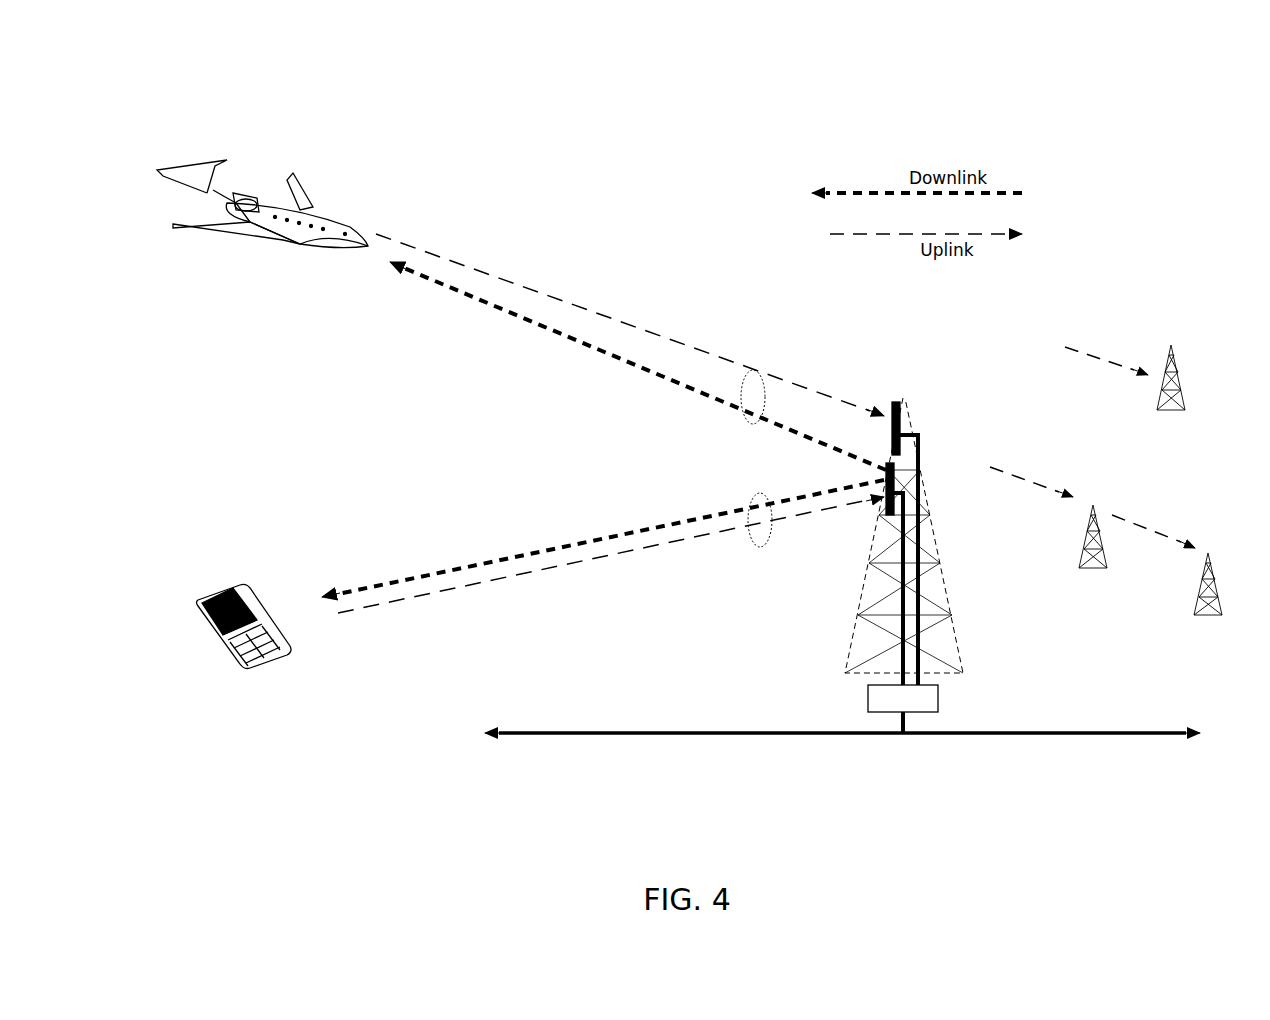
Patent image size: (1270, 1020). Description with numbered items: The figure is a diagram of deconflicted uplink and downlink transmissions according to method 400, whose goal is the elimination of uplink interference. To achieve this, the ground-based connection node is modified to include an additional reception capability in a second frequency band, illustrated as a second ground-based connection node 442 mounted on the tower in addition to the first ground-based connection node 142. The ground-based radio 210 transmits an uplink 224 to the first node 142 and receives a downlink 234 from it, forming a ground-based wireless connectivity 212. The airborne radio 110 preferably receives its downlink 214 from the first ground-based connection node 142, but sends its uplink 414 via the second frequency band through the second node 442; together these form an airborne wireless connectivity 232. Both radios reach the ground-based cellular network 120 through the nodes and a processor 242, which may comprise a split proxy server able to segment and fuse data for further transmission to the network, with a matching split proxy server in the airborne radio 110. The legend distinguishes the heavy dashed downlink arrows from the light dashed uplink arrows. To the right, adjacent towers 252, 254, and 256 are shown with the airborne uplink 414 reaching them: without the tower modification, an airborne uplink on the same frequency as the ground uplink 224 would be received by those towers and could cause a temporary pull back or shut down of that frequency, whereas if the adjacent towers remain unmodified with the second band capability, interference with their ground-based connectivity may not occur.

The method 400 is at (106, 122).
The airborne radio 110 is at (315, 212).
The ground-based radio 210 is at (217, 632).
The first ground-based connection node 142 is at (884, 500).
The second ground-based connection node 442 is at (898, 404).
The processor 242 is at (940, 700).
The ground-based cellular network 120 is at (620, 732).
The uplink 414 is at (575, 304).
The downlink 214 is at (482, 298).
The uplink 224 is at (470, 568).
The downlink 234 is at (520, 577).
The airborne wireless connectivity 232 is at (753, 370).
The ground-based wireless connectivity 212 is at (757, 548).
The adjacent tower 252 is at (1085, 558).
The adjacent tower 254 is at (1197, 600).
The adjacent tower 256 is at (1176, 368).